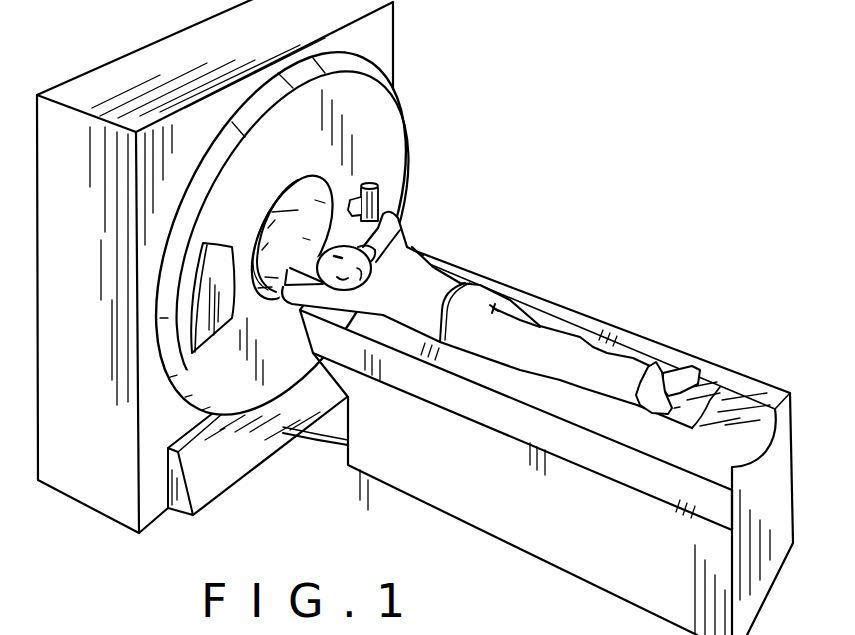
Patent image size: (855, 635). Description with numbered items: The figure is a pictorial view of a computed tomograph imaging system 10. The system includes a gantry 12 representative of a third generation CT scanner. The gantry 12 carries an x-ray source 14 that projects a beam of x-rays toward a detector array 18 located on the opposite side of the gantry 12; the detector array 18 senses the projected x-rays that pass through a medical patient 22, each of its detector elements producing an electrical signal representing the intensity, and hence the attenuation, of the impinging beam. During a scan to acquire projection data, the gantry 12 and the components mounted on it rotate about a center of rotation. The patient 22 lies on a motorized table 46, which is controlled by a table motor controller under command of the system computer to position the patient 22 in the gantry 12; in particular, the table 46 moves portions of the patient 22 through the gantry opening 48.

The CT imaging system 10 is at (321, 455).
The gantry 12 is at (67, 140).
The x-ray source 14 is at (378, 204).
The detector array 18 is at (208, 315).
The medical patient 22 is at (418, 280).
The motorized table 46 is at (425, 469).
The gantry opening 48 is at (298, 210).